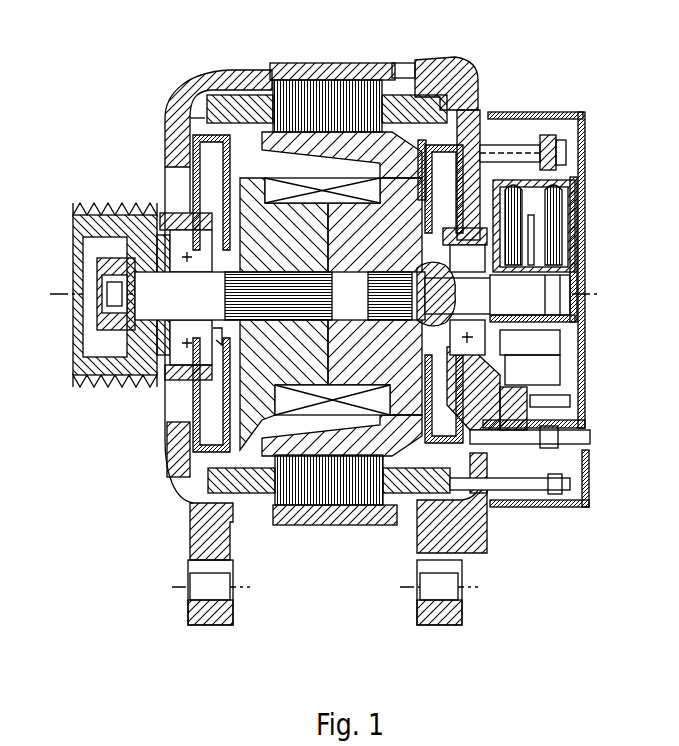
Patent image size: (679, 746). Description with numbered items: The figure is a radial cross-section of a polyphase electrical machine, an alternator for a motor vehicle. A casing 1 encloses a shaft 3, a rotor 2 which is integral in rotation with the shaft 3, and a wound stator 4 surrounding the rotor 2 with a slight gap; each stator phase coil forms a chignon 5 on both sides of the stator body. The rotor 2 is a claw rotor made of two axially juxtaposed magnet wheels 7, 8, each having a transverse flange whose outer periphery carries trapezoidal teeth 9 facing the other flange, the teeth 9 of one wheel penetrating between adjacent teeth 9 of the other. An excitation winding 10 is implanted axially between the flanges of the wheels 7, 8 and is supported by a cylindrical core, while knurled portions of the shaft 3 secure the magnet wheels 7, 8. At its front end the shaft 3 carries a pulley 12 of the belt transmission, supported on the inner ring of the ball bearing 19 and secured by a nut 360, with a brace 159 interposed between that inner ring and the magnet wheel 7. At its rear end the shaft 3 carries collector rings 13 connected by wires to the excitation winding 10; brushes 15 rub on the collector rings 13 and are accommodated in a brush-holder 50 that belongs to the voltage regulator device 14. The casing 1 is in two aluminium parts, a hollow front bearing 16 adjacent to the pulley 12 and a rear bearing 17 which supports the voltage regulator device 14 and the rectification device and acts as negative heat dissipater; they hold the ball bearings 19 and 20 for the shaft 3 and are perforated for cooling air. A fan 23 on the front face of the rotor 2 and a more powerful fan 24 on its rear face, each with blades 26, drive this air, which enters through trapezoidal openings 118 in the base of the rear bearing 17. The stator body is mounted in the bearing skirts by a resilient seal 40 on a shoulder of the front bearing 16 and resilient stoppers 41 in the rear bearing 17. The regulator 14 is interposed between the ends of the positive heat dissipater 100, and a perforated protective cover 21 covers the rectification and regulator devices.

The casing 1 is at (163, 78).
The rotor 2 is at (258, 170).
The shaft 3 is at (351, 296).
The wound stator 4 is at (329, 62).
The chignon 5 is at (437, 132).
The magnet wheel 7 is at (284, 314).
The magnet wheel 8 is at (375, 296).
The teeth 9 is at (342, 155).
The excitation winding 10 is at (327, 296).
The pulley 12 is at (78, 252).
The collector rings 13 is at (548, 303).
The voltage regulator device 14 is at (578, 206).
The brushes 15 is at (533, 262).
The front flange (front bearing) 16 is at (178, 132).
The rear flange (rear bearing) 17 is at (475, 210).
The ball bearing 19 is at (186, 296).
The ball bearing 20 is at (467, 300).
The protective cover 21 is at (586, 392).
The fan 23 is at (198, 127).
The fan 24 is at (428, 145).
The blades 26 is at (212, 164).
The resilient seal 40 is at (267, 94).
The resilient stoppers 41 is at (383, 67).
The brush-holder 50 is at (580, 240).
The positive heat dissipater 100 is at (510, 382).
The air intake opening 118 is at (510, 163).
The brace 159 is at (218, 330).
The nut 360 is at (115, 343).